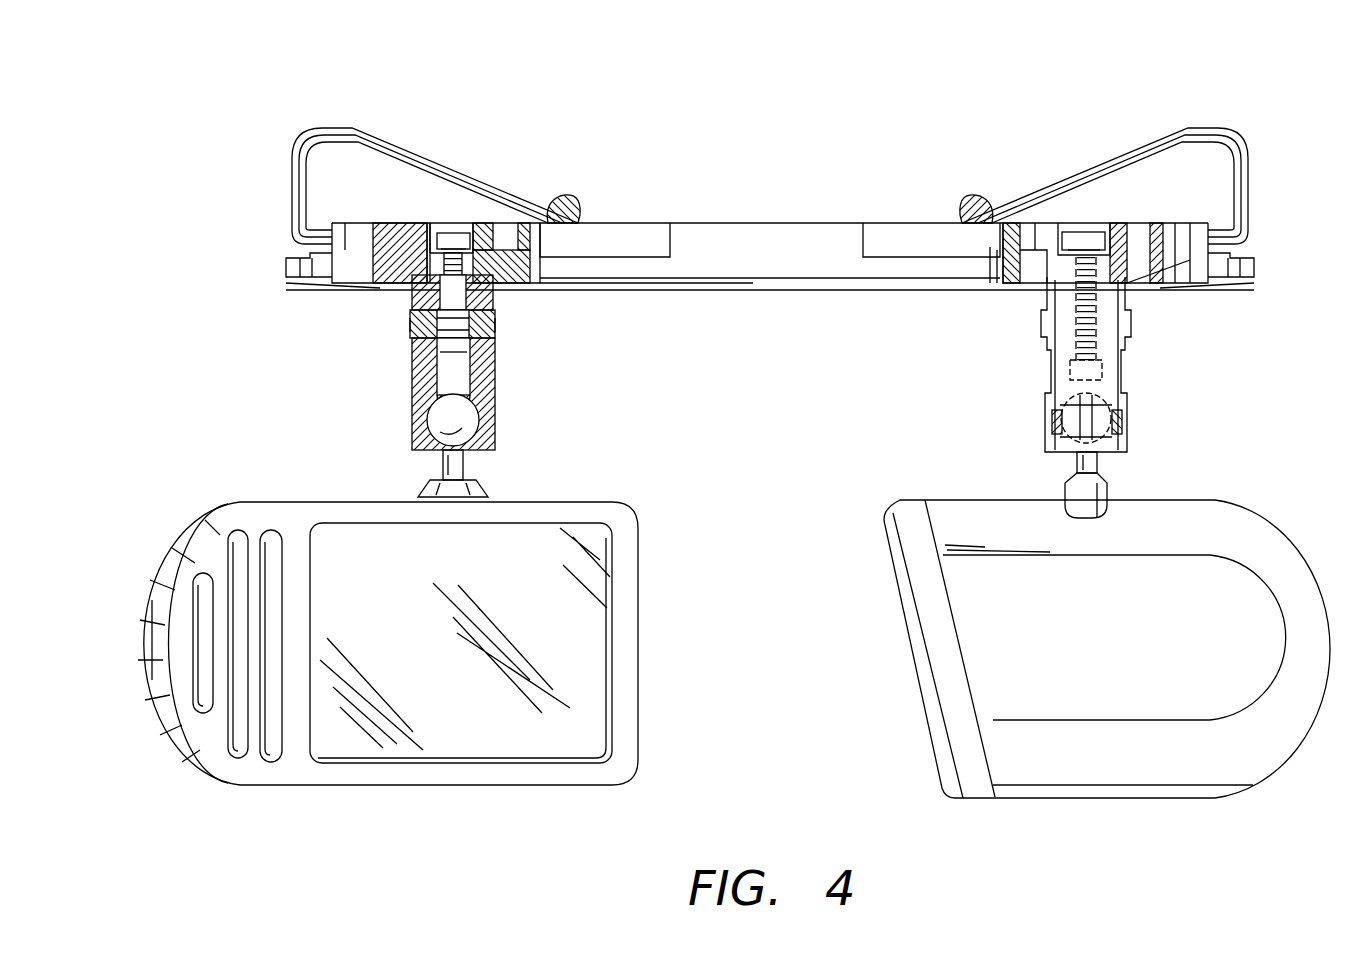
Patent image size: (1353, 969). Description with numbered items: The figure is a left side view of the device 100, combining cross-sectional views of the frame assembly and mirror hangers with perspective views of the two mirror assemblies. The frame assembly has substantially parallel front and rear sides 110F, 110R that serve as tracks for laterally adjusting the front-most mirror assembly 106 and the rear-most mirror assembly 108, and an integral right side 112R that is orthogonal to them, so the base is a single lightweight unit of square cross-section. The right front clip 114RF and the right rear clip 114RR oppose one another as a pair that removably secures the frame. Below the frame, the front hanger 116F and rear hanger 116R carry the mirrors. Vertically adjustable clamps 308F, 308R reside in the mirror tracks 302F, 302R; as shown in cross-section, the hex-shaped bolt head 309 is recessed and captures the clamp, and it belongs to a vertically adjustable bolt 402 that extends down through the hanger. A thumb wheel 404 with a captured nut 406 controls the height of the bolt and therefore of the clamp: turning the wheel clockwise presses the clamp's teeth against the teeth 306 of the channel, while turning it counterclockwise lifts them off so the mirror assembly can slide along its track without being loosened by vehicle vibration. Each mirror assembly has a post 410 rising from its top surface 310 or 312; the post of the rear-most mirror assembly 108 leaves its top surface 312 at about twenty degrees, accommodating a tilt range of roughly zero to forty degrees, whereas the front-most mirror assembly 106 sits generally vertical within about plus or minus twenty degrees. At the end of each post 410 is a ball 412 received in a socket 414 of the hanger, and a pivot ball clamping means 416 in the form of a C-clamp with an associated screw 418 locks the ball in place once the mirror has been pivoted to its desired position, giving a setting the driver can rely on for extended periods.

The device 100 is at (770, 155).
The front-most mirror assembly 106 is at (503, 790).
The rear-most mirror assembly 108 is at (1160, 793).
The front side 110F is at (373, 263).
The rear side 110R is at (1163, 257).
The right side 112R is at (760, 238).
The right front clip 114RF is at (382, 132).
The right rear clip 114RR is at (1213, 122).
The front hanger 116F is at (471, 393).
The rear hanger 116R is at (1096, 364).
The front mirror track 302F is at (452, 250).
The rear mirror track 302R is at (1096, 255).
The teeth 306 is at (400, 243).
The front vertically adjustable clamp 308F is at (460, 240).
The rear vertically adjustable clamp 308R is at (1097, 230).
The hex-shaped bolt head 309 is at (457, 235).
The top surface of front mirror assembly 310 is at (417, 636).
The top surface of rear mirror assembly 312 is at (1098, 633).
The vertically adjustable bolt 402 is at (412, 300).
The thumb wheel 404 is at (495, 330).
The captured nut 406 is at (418, 333).
The post 410 is at (463, 470).
The ball 412 is at (463, 428).
The socket 414 is at (415, 425).
The pivot ball clamping means 416 is at (1060, 413).
The screw 418 is at (1117, 430).